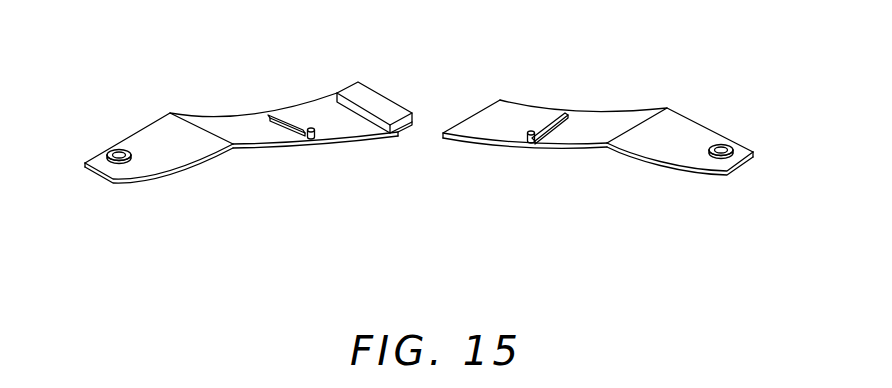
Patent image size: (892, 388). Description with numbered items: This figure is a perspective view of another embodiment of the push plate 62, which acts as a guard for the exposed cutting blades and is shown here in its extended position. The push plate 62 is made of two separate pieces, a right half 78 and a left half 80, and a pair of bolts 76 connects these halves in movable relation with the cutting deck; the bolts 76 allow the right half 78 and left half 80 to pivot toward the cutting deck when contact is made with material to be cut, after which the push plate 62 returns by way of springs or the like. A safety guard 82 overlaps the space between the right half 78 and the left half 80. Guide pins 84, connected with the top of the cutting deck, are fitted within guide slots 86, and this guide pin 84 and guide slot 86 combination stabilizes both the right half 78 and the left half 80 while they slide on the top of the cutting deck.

The push plate 62 is at (307, 160).
The bolt 76 is at (117, 149).
The right half 78 is at (628, 117).
The left half 80 is at (217, 120).
The safety guard 82 is at (380, 88).
The guide pin 84 is at (316, 131).
The guide slot 86 is at (298, 118).